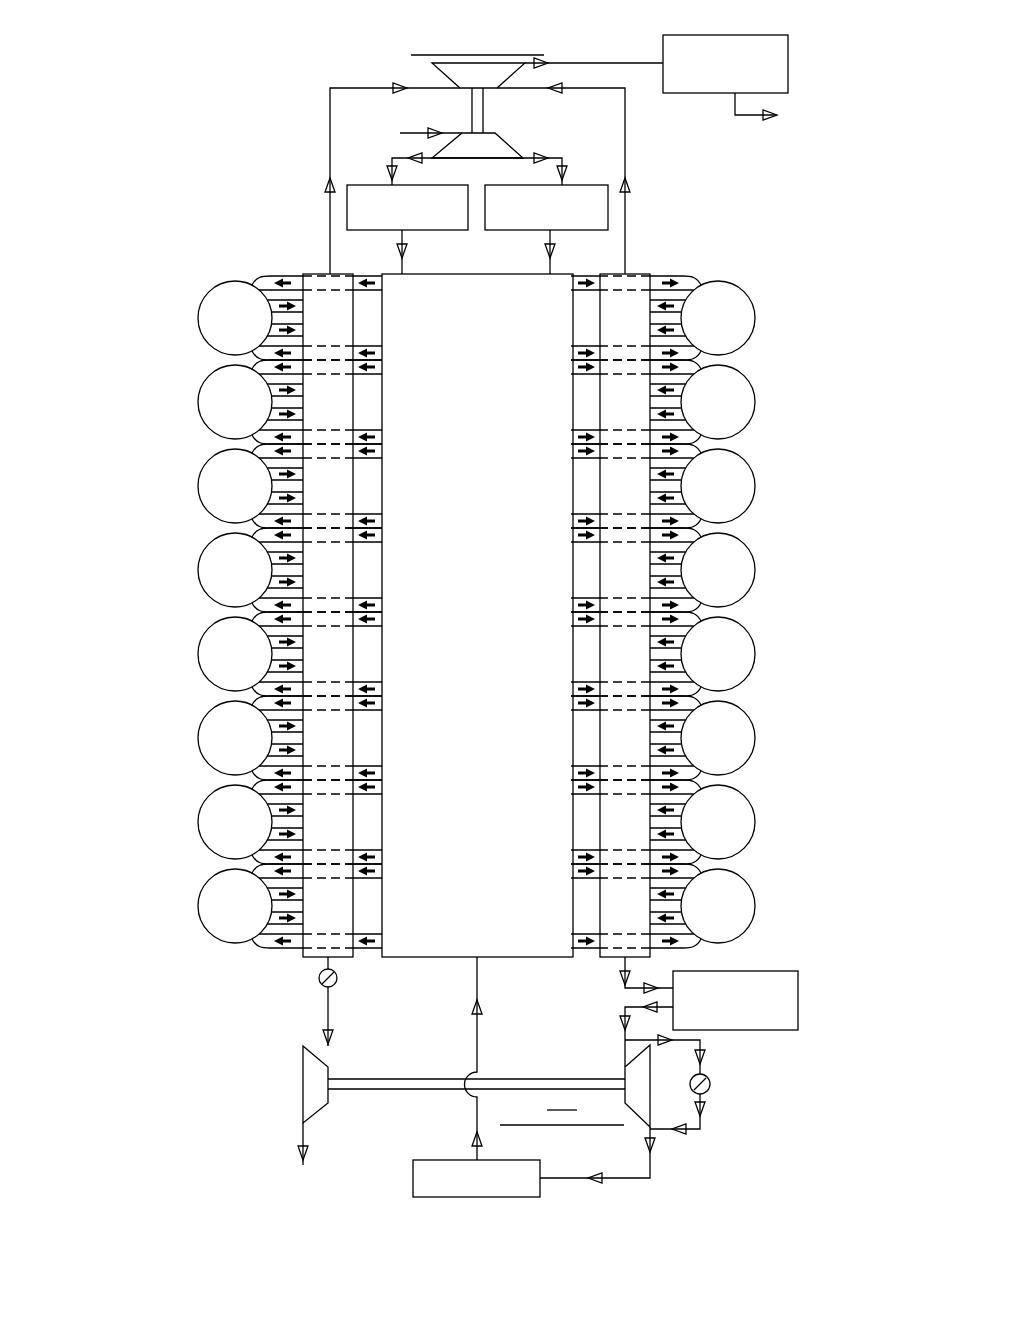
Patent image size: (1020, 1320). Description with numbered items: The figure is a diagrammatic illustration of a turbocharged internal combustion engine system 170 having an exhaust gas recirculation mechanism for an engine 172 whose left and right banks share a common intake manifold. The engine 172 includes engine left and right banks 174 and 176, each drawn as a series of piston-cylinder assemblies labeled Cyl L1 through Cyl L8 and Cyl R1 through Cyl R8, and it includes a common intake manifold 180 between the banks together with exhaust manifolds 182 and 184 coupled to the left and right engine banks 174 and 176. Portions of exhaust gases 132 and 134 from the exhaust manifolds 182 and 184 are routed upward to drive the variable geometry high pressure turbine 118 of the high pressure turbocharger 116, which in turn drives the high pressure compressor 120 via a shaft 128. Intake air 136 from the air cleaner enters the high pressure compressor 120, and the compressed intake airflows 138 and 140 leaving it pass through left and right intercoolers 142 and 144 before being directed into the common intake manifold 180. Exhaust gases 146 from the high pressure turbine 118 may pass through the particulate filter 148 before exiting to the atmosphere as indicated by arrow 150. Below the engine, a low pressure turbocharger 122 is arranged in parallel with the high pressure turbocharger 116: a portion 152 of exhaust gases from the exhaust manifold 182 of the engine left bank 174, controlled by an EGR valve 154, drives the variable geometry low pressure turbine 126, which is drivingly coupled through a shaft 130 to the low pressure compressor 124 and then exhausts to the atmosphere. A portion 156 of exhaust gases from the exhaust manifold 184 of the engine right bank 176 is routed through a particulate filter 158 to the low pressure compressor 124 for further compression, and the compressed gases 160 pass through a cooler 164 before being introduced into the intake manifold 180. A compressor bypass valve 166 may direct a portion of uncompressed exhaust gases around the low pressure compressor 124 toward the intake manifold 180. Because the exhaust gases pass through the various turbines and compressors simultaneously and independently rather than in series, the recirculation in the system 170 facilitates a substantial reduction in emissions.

The high pressure turbocharger 116 is at (486, 85).
The variable geometry high pressure turbine 118 is at (432, 73).
The high pressure compressor 120 is at (512, 150).
The low pressure turbocharger 122 is at (443, 1096).
The low pressure compressor 124 is at (625, 1075).
The variable geometry low pressure turbine 126 is at (303, 1085).
The shaft 128 is at (484, 115).
The shaft 130 is at (415, 1079).
The exhaust gases 132 is at (328, 130).
The exhaust gases 134 is at (627, 152).
The intake air 136 is at (422, 132).
The compressed intake airflow 138 is at (404, 250).
The compressed intake airflow 140 is at (552, 250).
The left intercooler 142 is at (347, 208).
The right intercooler 144 is at (608, 208).
The exhaust gases 146 is at (634, 66).
The particulate filter 148 is at (788, 70).
The arrow 150 is at (760, 114).
The portion of exhaust gases 152 is at (335, 1051).
The EGR valve 154 is at (338, 980).
The portion of exhaust gases 156 is at (620, 975).
The particulate filter 158 is at (798, 1000).
The compressed gases 160 is at (658, 1150).
The cooler 164 is at (540, 1190).
The compressor bypass valve 166 is at (700, 1055).
The turbocharged internal combustion engine system 170 is at (172, 31).
The engine 172 is at (478, 638).
The engine left bank 174 is at (166, 840).
The engine right bank 176 is at (792, 849).
The common intake manifold 180 is at (460, 960).
The exhaust manifold 182 is at (343, 483).
The exhaust manifold 184 is at (612, 408).